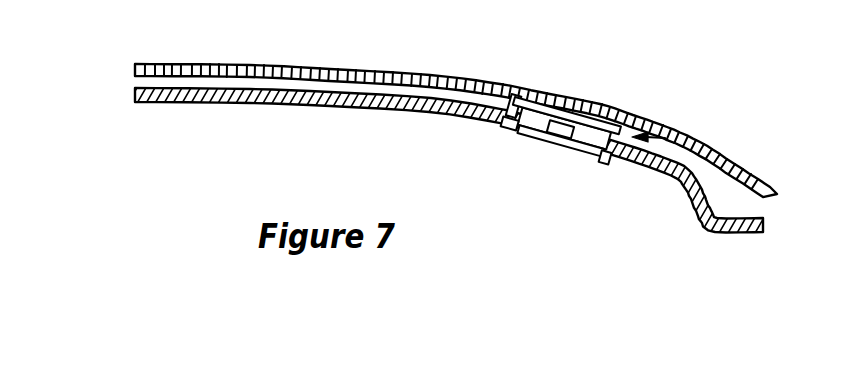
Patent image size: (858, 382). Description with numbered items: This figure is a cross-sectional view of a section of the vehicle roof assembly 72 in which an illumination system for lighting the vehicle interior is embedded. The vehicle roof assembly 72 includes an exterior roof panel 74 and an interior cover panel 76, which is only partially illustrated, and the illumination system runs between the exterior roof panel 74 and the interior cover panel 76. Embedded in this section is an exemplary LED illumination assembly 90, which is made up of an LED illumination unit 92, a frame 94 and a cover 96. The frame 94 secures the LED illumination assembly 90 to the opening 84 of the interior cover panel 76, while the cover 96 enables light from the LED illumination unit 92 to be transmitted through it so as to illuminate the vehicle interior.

The vehicle roof assembly 72 is at (638, 28).
The exterior roof panel 74 is at (445, 75).
The interior cover panel 76 is at (380, 112).
The opening 84 is at (527, 132).
The LED illumination assembly 90 is at (665, 138).
The LED illumination unit 92 is at (543, 103).
The frame 94 is at (603, 149).
The cover 96 is at (553, 138).